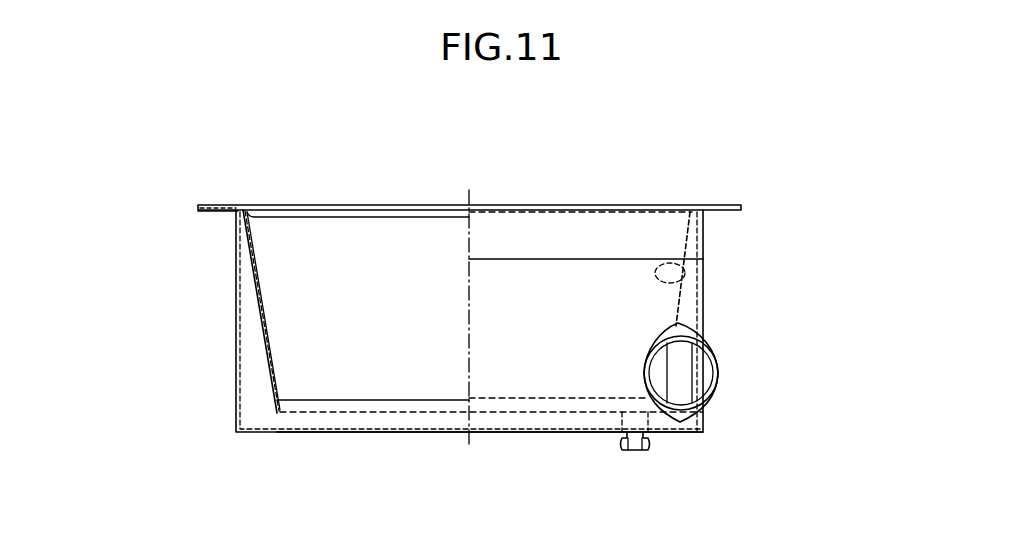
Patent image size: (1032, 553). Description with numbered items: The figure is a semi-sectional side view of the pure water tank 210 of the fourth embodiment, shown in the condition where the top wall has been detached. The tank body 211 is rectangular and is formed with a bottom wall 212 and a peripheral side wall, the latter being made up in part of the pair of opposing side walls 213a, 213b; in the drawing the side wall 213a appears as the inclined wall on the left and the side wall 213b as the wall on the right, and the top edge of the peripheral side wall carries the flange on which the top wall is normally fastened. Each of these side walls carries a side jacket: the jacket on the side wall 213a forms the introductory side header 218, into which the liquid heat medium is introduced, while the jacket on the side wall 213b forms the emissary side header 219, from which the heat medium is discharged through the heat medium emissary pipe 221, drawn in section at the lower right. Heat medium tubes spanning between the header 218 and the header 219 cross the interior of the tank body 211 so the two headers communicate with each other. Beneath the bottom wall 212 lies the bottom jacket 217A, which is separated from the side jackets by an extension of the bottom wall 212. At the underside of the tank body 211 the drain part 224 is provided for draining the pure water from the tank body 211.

The pure water tank 210 is at (660, 186).
The tank body 211 is at (546, 198).
The bottom wall 212 is at (375, 405).
The side wall 213a is at (256, 290).
The side wall 213b is at (688, 270).
The bottom jacket 217A is at (400, 421).
The introductory side header 218 is at (236, 352).
The emissary side header 219 is at (688, 301).
The heat medium emissary pipe 221 is at (719, 383).
The drain part 224 is at (614, 446).